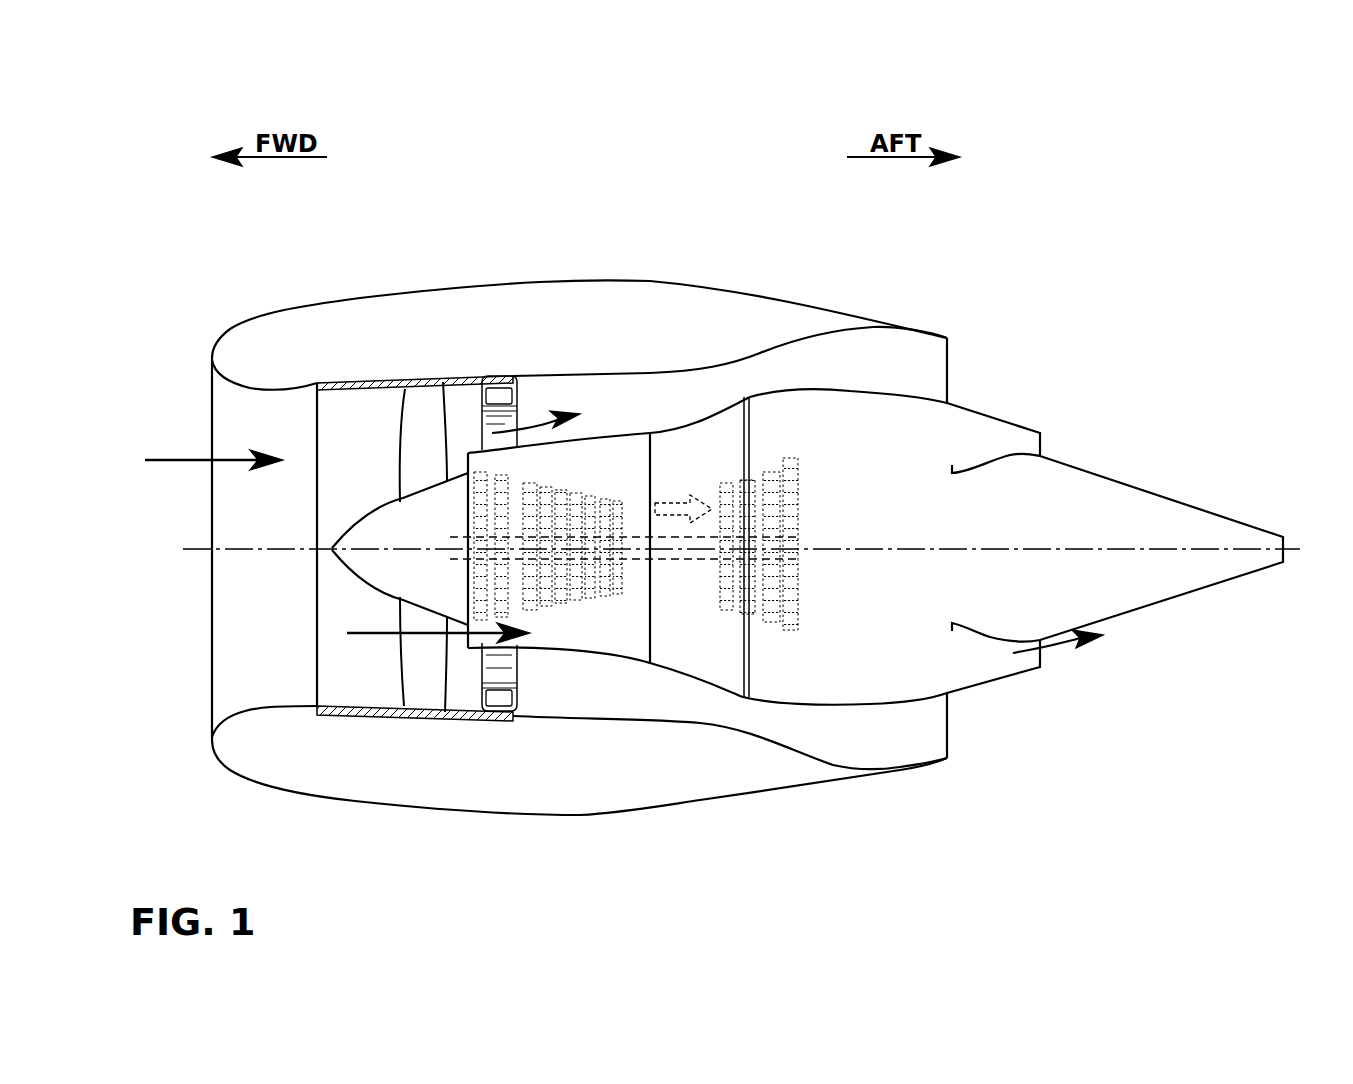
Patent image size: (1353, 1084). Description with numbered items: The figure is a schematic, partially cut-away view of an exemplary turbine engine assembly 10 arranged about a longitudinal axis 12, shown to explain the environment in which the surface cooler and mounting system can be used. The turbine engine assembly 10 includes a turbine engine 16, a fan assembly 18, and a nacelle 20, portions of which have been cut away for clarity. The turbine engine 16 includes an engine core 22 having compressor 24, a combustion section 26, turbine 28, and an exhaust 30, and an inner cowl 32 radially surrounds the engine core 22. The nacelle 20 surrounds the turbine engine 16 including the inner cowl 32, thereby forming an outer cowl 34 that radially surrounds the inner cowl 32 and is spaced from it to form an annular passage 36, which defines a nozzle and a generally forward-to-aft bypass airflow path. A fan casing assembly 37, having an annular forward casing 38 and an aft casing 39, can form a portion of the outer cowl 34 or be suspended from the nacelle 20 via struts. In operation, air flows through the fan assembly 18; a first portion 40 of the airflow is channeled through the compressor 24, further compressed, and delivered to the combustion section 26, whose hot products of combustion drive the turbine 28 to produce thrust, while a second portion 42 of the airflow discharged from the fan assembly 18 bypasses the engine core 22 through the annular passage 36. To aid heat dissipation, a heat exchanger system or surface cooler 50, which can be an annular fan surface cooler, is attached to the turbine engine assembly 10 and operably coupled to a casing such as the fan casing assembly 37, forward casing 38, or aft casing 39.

The turbine engine assembly 10 is at (438, 226).
The longitudinal axis 12 is at (192, 549).
The turbine engine 16 is at (623, 450).
The fan assembly 18 is at (416, 405).
The nacelle 20 is at (298, 307).
The engine core 22 is at (638, 622).
The compressor 24 is at (567, 603).
The combustion section 26 is at (673, 580).
The turbine 28 is at (773, 578).
The exhaust 30 is at (1000, 668).
The inner cowl 32 is at (757, 397).
The outer cowl 34 is at (768, 353).
The annular passage 36 is at (904, 749).
The fan casing assembly 37 is at (332, 663).
The annular forward casing 38 is at (317, 627).
The aft casing 39 is at (497, 374).
The first portion of the airflow 40 is at (458, 640).
The second portion of the airflow 42 is at (537, 420).
The surface cooler 50 is at (505, 668).